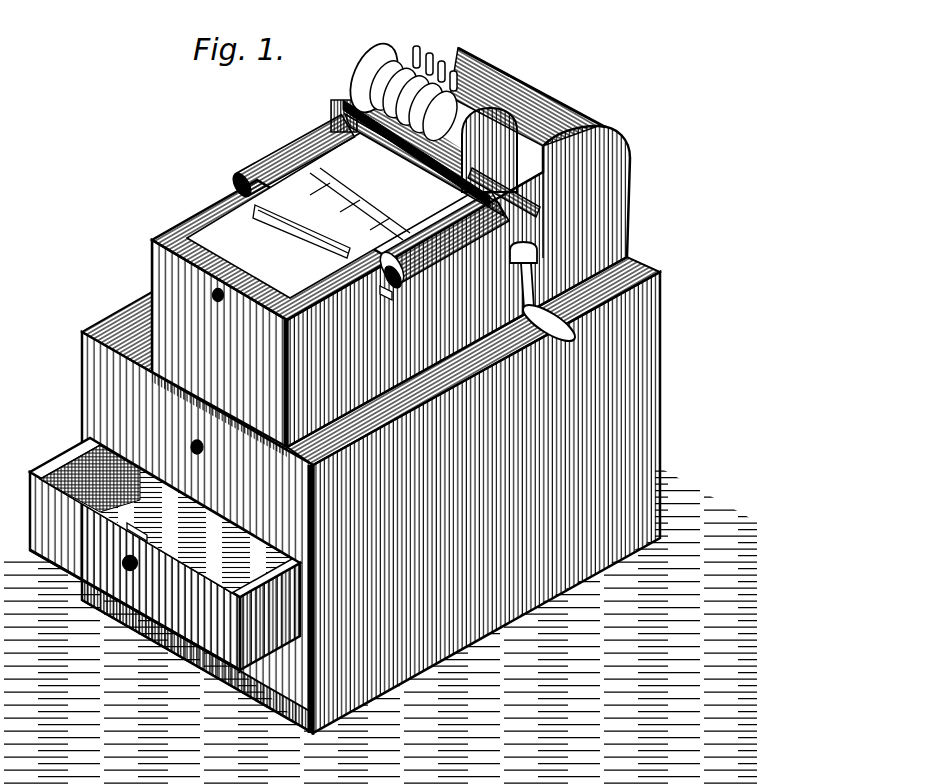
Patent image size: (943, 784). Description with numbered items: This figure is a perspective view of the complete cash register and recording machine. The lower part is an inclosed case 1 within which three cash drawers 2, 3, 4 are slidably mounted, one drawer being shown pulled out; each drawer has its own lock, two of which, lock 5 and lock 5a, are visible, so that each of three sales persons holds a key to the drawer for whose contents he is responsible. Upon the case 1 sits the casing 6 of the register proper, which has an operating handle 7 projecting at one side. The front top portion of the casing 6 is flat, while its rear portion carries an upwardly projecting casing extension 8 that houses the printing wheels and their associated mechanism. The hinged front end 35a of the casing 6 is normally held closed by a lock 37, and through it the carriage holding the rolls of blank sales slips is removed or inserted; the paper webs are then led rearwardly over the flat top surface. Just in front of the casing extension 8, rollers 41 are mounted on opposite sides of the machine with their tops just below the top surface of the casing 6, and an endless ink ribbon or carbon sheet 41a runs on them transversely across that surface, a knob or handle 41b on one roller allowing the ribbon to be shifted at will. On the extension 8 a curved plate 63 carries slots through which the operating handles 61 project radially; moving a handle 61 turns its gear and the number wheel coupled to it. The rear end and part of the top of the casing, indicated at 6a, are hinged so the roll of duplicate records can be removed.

The inclosed case 1 is at (371, 495).
The cash drawer 2 is at (197, 532).
The cash drawer 3 is at (165, 554).
The cash drawer 4 is at (197, 656).
The lock 5 is at (193, 444).
The lock 5a is at (122, 563).
The casing of the register proper 6 is at (391, 273).
The hinged rear end and top portion of casing 6a is at (588, 127).
The operating handle 7 is at (521, 292).
The casing extension 8 is at (489, 150).
The front end of the casing 35a is at (327, 215).
The lock 37 is at (219, 301).
The rollers 41 is at (240, 177).
The endless ink ribbon or carbon sheet 41a is at (303, 143).
The knob or handle 41b is at (385, 292).
The operating handle 61 is at (434, 55).
The curved plate 63 is at (370, 87).